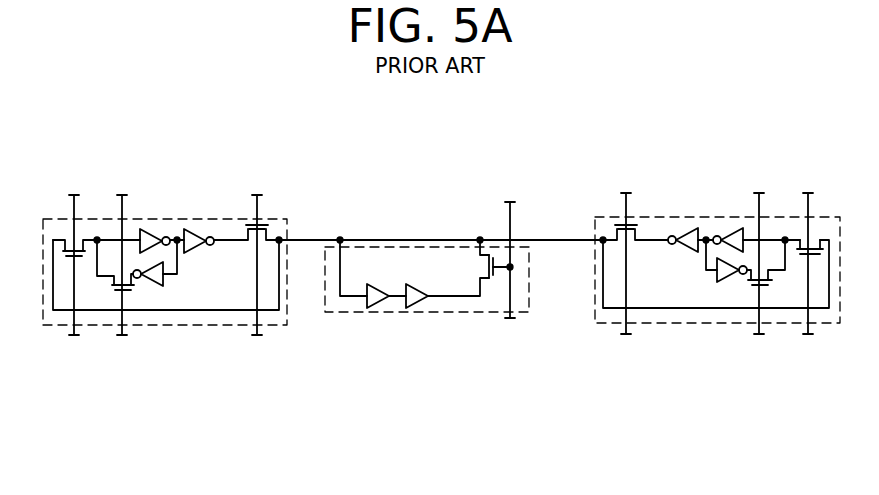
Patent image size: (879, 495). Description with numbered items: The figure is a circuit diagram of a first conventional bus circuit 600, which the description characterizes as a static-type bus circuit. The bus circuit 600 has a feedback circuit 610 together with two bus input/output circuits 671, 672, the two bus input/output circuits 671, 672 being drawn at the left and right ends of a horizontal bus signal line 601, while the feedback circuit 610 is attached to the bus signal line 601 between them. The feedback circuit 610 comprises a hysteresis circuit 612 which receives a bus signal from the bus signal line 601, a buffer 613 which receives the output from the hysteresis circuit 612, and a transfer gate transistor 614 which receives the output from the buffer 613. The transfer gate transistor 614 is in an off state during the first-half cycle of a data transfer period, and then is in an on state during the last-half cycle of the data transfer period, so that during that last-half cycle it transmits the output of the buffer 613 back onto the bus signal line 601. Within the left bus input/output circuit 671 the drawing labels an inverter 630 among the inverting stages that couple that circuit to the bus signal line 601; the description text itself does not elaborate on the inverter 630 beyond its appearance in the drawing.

The bus circuit 600 is at (452, 192).
The bus signal line 601 is at (378, 240).
The feedback circuit 610 is at (529, 268).
The hysteresis circuit 612 is at (378, 304).
The buffer 613 is at (418, 304).
The transfer gate transistor 614 is at (492, 282).
The inverter 630 is at (197, 228).
The bus input/output circuit 671 is at (106, 218).
The bus input/output circuit 672 is at (699, 216).